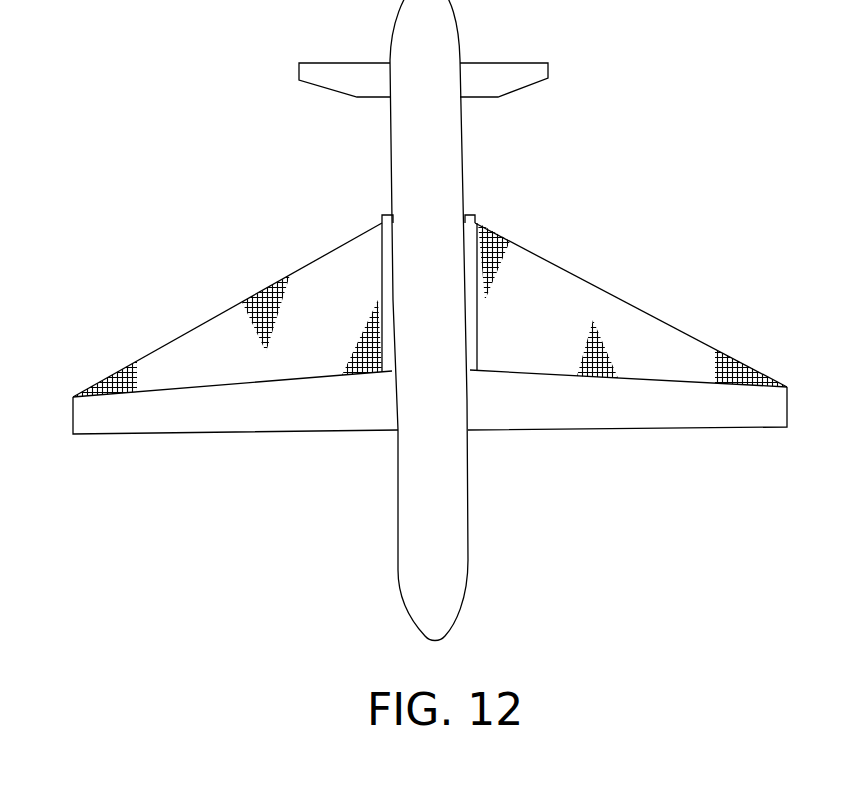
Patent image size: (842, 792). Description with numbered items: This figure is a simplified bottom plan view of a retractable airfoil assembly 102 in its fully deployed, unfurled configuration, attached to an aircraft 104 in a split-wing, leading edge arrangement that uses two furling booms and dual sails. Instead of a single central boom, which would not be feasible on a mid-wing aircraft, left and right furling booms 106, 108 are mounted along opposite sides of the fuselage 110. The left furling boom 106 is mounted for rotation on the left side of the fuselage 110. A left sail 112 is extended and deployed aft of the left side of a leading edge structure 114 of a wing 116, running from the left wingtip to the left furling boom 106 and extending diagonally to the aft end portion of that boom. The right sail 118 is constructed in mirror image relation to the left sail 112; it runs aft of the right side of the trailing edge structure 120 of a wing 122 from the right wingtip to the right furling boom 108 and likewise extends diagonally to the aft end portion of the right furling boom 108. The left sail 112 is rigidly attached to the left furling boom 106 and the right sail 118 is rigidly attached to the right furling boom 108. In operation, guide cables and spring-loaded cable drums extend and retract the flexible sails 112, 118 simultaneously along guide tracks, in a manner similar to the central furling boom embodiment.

The retractable airfoil assembly 102 is at (256, 266).
The aircraft 104 is at (612, 98).
The left furling boom 106 is at (387, 253).
The right furling boom 108 is at (475, 308).
The fuselage 110 is at (441, 146).
The left sail 112 is at (177, 358).
The leading edge structure 114 is at (275, 375).
The wing 116 is at (232, 420).
The right sail 118 is at (672, 342).
The trailing edge structure 120 is at (636, 380).
The wing 122 is at (720, 412).